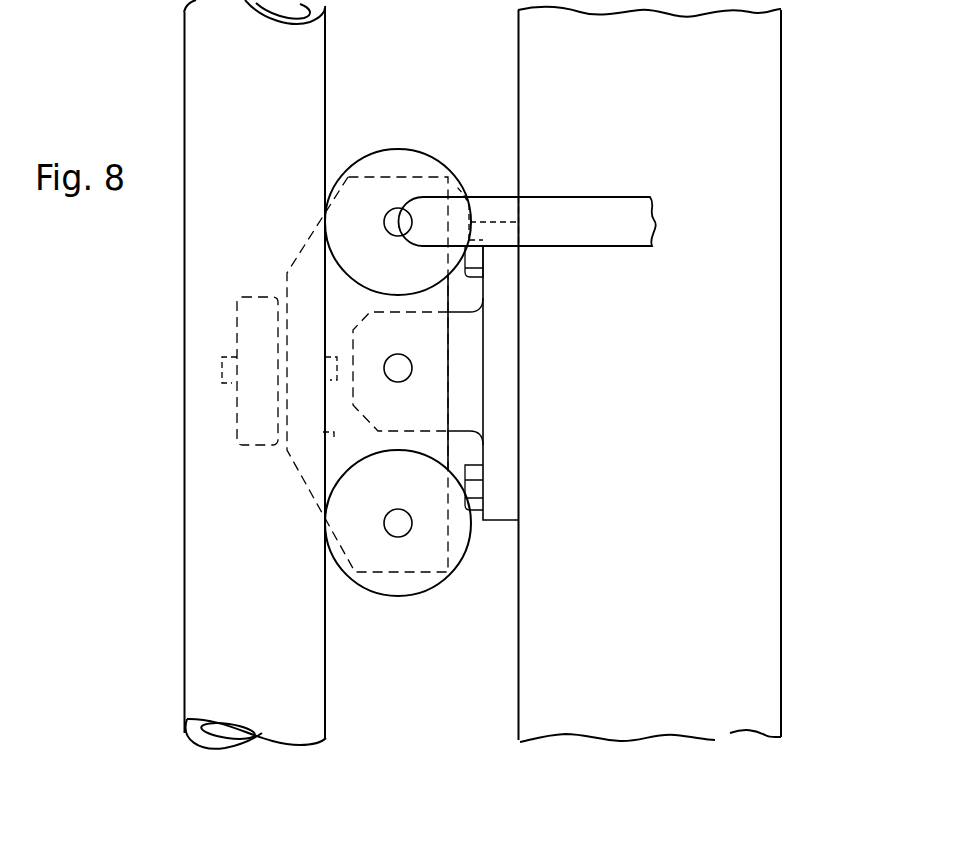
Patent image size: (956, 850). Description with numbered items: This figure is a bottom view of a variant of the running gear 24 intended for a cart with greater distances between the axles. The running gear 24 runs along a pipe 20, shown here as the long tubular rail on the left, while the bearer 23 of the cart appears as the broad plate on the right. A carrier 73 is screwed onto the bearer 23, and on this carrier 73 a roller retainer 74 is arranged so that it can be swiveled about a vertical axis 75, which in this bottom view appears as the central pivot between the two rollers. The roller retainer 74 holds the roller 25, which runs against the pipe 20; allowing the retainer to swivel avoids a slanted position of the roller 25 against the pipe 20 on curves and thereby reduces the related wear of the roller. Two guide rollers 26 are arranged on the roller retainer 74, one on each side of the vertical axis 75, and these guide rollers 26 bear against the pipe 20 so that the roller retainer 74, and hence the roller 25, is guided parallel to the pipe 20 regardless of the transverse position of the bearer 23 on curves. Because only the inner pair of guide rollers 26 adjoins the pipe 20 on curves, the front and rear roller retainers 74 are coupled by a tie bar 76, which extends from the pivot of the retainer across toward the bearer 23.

The pipe 20 is at (210, 65).
The bearer 23 is at (759, 67).
The running gear 24 is at (432, 92).
The roller 25 is at (252, 322).
The guide rollers 26 is at (383, 162).
The carrier 73 is at (352, 333).
The roller retainer 74 is at (323, 432).
The vertical axis 75 is at (396, 368).
The tie bar 76 is at (558, 212).